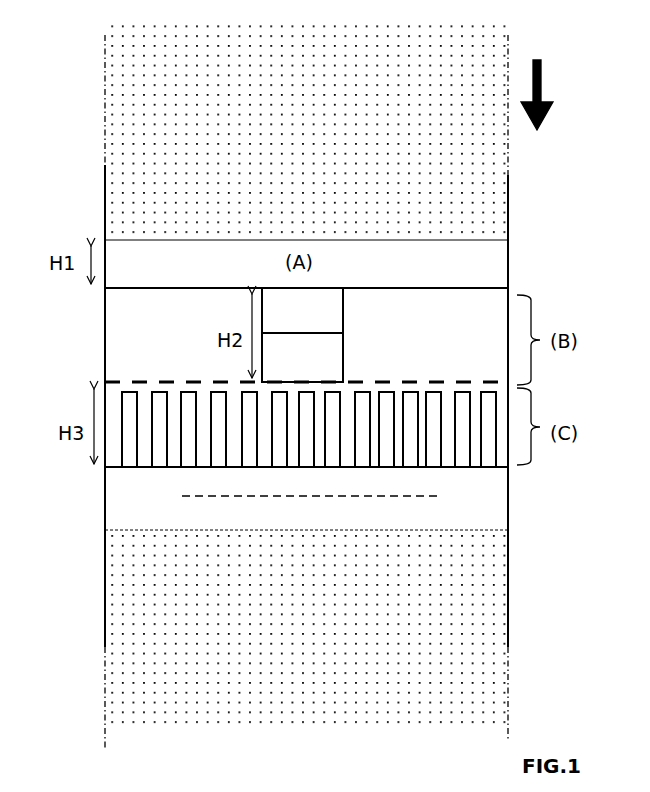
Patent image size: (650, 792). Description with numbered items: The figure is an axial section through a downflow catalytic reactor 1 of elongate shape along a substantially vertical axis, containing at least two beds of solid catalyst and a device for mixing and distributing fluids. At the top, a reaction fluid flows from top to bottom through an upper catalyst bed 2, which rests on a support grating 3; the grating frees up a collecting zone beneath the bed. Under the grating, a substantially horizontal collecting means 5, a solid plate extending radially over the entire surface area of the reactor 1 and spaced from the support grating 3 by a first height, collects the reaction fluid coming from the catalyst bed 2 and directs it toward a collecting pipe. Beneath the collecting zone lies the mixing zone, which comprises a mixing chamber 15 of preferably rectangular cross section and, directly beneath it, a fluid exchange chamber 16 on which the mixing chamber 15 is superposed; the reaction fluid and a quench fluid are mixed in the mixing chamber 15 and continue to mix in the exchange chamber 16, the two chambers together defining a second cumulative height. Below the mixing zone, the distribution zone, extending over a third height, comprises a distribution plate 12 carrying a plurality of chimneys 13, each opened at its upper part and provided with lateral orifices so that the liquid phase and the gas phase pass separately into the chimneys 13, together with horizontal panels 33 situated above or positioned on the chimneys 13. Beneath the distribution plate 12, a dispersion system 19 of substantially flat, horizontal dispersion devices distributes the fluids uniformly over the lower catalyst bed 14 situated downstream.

The reactor 1 is at (105, 165).
The catalyst bed 2 is at (299, 149).
The support grating 3 is at (135, 240).
The collecting means 5 is at (484, 288).
The distribution plate 12 is at (118, 470).
The chimneys 13 is at (487, 452).
The catalyst bed 14 is at (315, 607).
The mixing chamber 15 is at (311, 322).
The exchange chamber 16 is at (311, 367).
The dispersion system 19 is at (352, 498).
The horizontal panels 33 is at (148, 378).